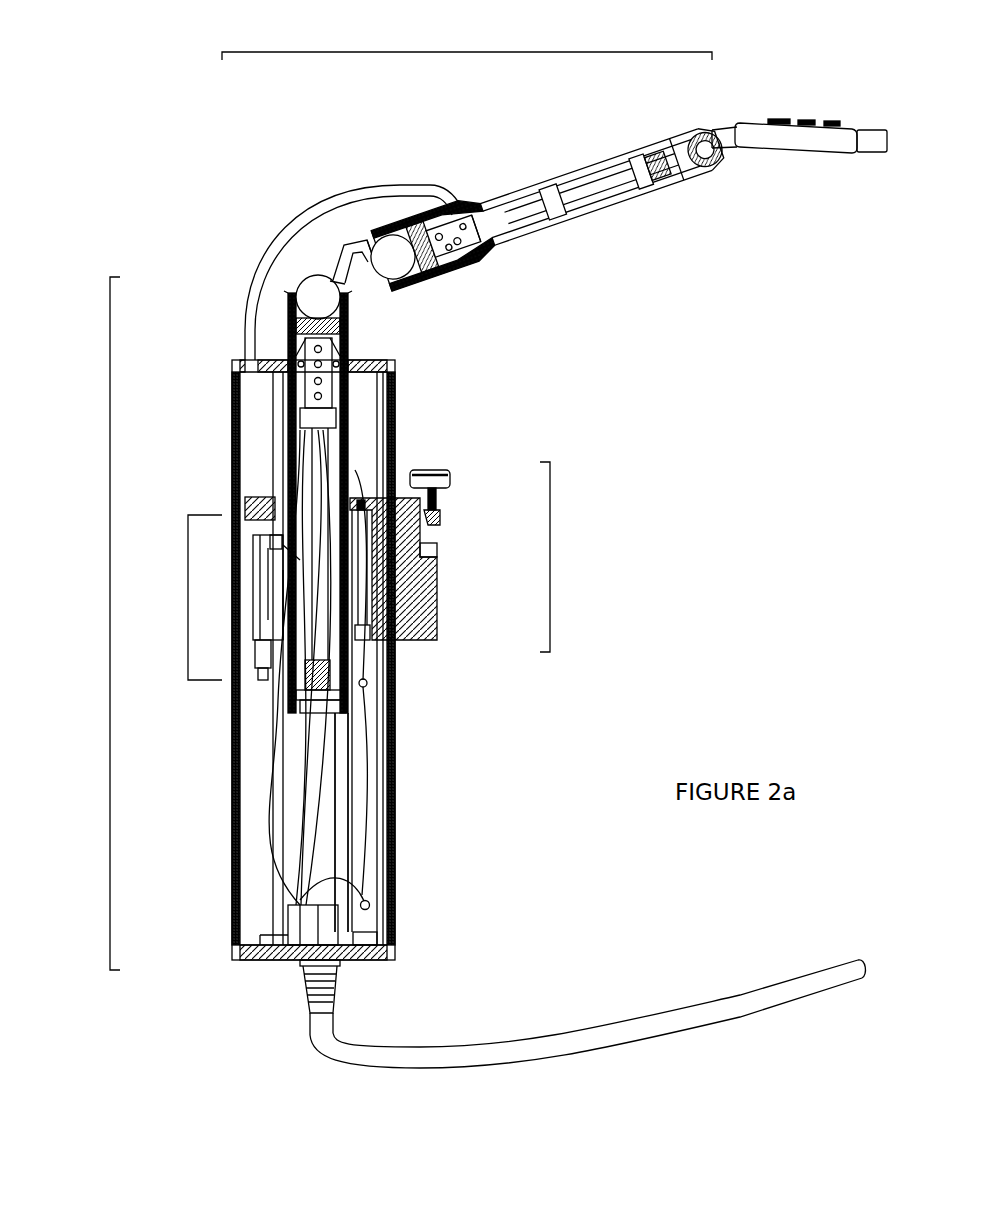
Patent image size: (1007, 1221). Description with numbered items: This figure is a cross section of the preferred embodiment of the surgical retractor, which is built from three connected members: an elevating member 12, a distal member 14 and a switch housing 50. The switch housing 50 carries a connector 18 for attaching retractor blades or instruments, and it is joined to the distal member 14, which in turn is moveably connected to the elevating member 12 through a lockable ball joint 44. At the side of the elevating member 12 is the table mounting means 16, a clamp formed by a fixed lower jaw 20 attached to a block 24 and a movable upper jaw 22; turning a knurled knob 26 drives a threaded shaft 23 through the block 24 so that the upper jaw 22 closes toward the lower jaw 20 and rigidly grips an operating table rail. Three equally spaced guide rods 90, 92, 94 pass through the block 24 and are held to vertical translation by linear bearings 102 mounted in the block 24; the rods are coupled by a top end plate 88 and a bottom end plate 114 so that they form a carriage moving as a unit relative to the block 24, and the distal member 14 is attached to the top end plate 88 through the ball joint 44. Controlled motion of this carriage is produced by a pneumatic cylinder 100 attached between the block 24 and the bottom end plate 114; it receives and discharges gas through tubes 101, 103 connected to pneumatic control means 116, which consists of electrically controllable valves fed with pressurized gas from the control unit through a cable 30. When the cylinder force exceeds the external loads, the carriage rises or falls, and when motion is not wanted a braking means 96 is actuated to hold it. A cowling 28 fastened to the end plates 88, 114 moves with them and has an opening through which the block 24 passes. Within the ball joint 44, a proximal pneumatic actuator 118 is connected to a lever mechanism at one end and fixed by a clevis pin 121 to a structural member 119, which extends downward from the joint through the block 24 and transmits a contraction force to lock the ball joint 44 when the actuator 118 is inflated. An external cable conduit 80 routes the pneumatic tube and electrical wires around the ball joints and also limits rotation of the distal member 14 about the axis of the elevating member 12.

The elevating member 12 is at (122, 660).
The distal member 14 is at (466, 46).
The table mounting means 16 is at (550, 552).
The connector 18 is at (801, 184).
The fixed lower jaw 20 is at (442, 557).
The movable upper jaw 22 is at (440, 518).
The threaded shaft 23 is at (437, 495).
The block 24 is at (443, 627).
The knurled knob 26 is at (450, 479).
The cowling 28 is at (232, 800).
The cable 30 is at (743, 997).
The ball joint 44 is at (283, 262).
The switch housing 50 is at (772, 155).
The external cable conduit 80 is at (363, 190).
The top end plate 88 is at (373, 358).
The guide rod 90 is at (272, 433).
The guide rod 92 is at (347, 762).
The guide rod 94 is at (347, 762).
The braking means 96 is at (188, 597).
The pneumatic cylinder 100 is at (378, 805).
The tube 101 is at (353, 828).
The linear bearings 102 is at (272, 492).
The tube 103 is at (353, 897).
The bottom end plate 114 is at (352, 962).
The pneumatic control means 116 is at (305, 920).
The proximal pneumatic actuator 118 is at (325, 483).
The structural member 119 is at (347, 423).
The clevis pin 121 is at (300, 688).